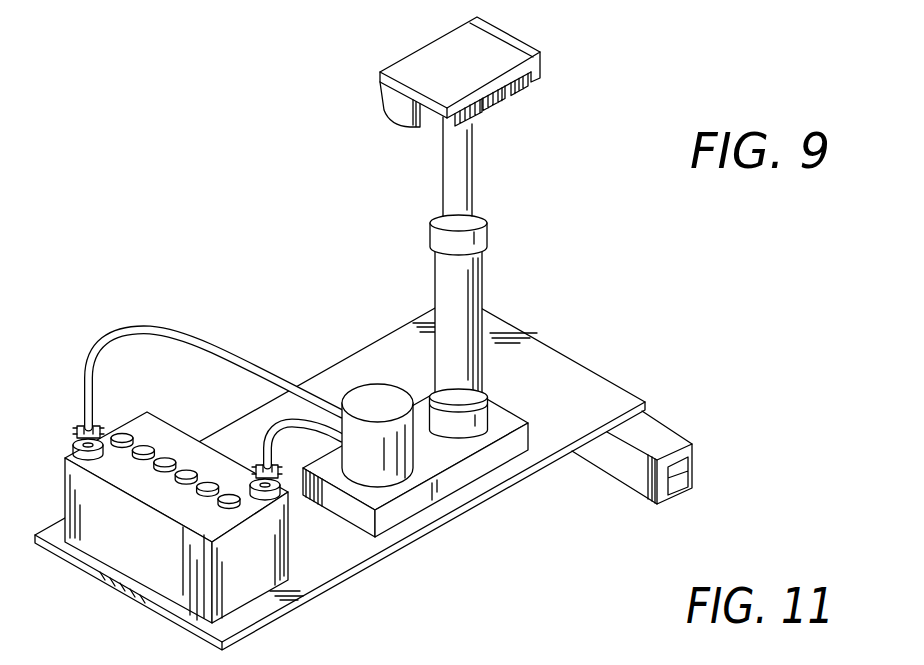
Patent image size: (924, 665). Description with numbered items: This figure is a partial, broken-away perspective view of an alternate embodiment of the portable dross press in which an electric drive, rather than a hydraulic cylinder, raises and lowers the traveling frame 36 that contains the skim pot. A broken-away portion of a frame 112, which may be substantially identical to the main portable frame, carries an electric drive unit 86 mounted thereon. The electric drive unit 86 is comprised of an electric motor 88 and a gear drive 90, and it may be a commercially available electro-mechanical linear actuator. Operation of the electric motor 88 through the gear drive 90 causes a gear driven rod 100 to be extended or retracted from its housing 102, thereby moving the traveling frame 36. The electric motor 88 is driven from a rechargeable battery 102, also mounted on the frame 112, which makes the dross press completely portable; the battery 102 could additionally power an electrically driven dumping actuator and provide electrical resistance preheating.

The traveling frame 36 is at (537, 44).
The gear driven rod 100 is at (474, 170).
The electric drive unit 86 is at (482, 280).
The electric motor 88 is at (372, 392).
The gear drive 90 is at (520, 421).
The battery 102 is at (487, 313).
The frame 112 is at (447, 523).